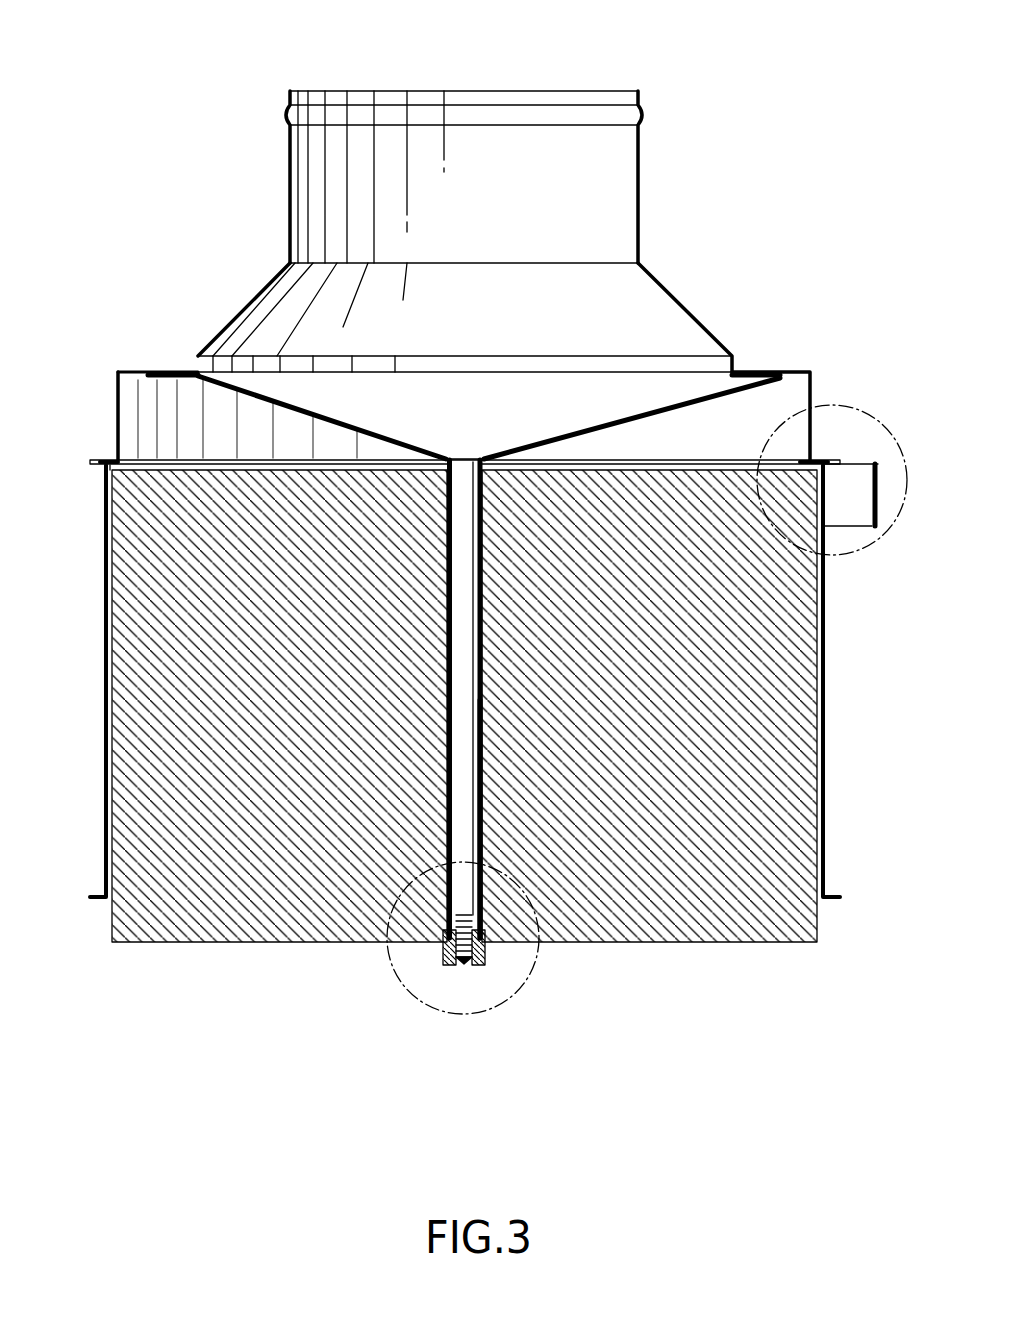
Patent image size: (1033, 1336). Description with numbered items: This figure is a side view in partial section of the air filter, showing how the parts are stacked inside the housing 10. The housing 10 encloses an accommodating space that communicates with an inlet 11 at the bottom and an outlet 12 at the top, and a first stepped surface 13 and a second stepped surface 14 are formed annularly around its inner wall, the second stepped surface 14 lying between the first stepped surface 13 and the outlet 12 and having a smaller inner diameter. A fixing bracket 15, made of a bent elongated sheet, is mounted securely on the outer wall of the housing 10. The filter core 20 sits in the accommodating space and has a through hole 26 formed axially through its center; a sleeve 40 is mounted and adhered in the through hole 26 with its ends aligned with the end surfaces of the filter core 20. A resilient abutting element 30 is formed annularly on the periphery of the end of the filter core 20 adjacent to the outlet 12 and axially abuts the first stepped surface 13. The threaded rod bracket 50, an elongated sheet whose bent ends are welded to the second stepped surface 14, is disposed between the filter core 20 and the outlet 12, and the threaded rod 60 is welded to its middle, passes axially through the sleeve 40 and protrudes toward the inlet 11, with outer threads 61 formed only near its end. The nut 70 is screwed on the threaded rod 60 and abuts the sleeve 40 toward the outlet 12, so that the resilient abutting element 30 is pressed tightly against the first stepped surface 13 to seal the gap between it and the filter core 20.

The housing 10 is at (110, 377).
The inlet 11 is at (246, 954).
The outlet 12 is at (350, 66).
The first stepped surface 13 is at (108, 468).
The second stepped surface 14 is at (137, 380).
The fixing bracket 15 is at (876, 528).
The filter core 20 is at (501, 736).
The through hole 26 is at (465, 690).
The resilient abutting element 30 is at (118, 466).
The sleeve 40 is at (480, 860).
The threaded rod bracket 50 is at (647, 405).
The threaded rod 60 is at (465, 527).
The outer threads 61 is at (488, 960).
The nut 70 is at (452, 965).